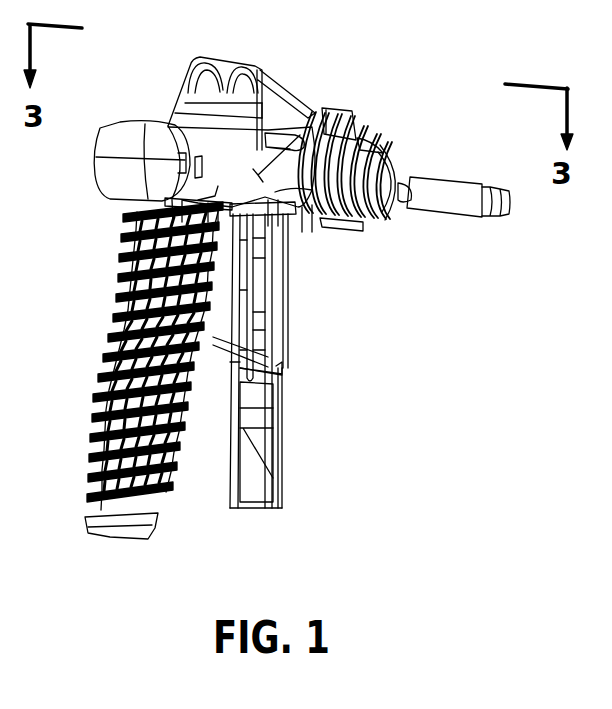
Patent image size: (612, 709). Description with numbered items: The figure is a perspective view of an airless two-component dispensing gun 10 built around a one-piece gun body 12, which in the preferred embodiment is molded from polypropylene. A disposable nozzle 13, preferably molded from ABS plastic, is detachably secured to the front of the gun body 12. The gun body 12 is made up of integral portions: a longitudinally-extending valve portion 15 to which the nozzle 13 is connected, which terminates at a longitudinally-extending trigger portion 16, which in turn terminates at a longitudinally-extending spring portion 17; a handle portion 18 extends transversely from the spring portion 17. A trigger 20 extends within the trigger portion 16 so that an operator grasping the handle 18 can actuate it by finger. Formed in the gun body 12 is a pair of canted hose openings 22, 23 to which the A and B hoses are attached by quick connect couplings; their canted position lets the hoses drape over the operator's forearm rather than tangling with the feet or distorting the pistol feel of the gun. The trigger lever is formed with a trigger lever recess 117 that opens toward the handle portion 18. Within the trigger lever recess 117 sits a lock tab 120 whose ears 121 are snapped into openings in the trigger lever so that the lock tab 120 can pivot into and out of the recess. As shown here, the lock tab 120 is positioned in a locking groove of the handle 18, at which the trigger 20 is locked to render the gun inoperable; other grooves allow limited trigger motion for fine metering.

The dispensing gun 10 is at (411, 318).
The gun body 12 is at (336, 237).
The nozzle 13 is at (424, 176).
The valve portion 15 is at (392, 220).
The trigger portion 16 is at (325, 124).
The spring portion 17 is at (226, 182).
The handle portion 18 is at (94, 416).
The trigger 20 is at (300, 407).
The hose opening 22 is at (185, 67).
The hose opening 23 is at (256, 68).
The trigger lever recess 117 is at (240, 435).
The lock tab 120 is at (226, 362).
The ears 121 is at (285, 363).